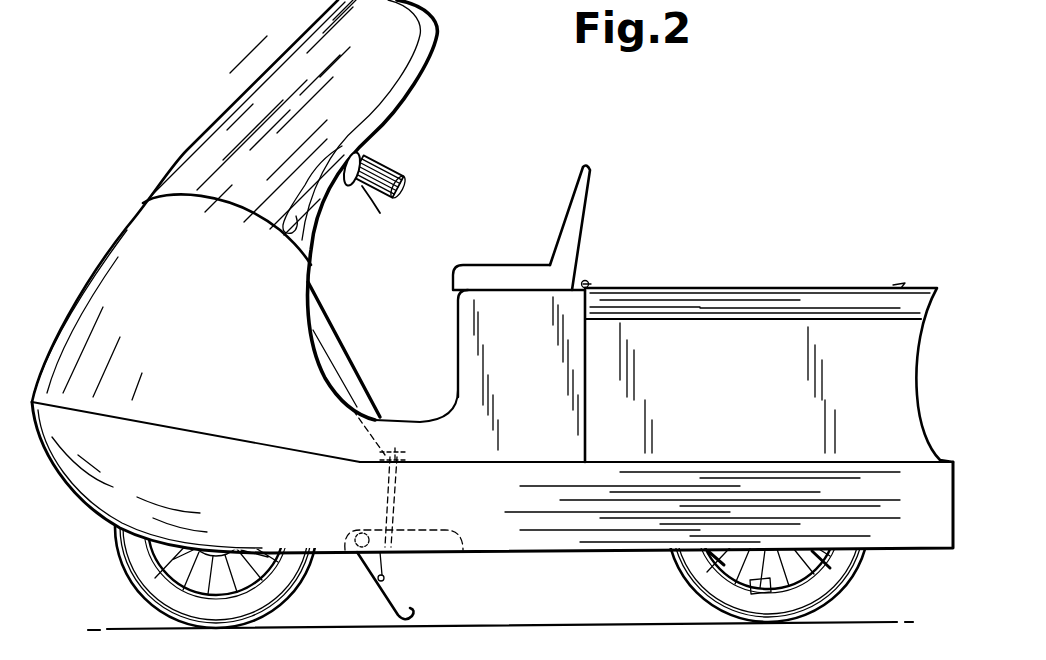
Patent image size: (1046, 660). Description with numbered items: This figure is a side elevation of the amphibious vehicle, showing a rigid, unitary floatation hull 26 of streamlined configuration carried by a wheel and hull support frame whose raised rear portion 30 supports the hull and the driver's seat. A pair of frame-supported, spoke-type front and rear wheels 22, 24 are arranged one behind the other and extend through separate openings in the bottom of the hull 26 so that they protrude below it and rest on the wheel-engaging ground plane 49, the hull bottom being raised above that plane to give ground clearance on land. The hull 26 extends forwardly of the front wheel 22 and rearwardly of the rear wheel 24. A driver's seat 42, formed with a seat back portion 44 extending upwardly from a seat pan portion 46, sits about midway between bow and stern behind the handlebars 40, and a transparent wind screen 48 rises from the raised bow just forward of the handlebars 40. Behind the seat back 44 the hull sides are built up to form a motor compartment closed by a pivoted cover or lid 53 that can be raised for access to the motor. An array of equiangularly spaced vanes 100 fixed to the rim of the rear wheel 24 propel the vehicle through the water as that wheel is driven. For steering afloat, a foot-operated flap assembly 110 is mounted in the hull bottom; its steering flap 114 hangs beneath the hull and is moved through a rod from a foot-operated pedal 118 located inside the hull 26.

The front wheel 22 is at (140, 587).
The rear wheel 24 is at (853, 585).
The floatation hull 26 is at (588, 511).
The raised rear portion 30 is at (345, 343).
The handlebars 40 is at (310, 173).
The driver's seat 42 is at (543, 250).
The seat back portion 44 is at (590, 198).
The seat pan portion 46 is at (485, 265).
The transparent wind screen 48 is at (272, 67).
The ground plane 49 is at (510, 627).
The cover or lid 53 is at (768, 288).
The vanes 100 is at (725, 557).
The flap assembly 110 is at (348, 583).
The steering flap 114 is at (390, 603).
The foot-operated pedal 118 is at (407, 452).